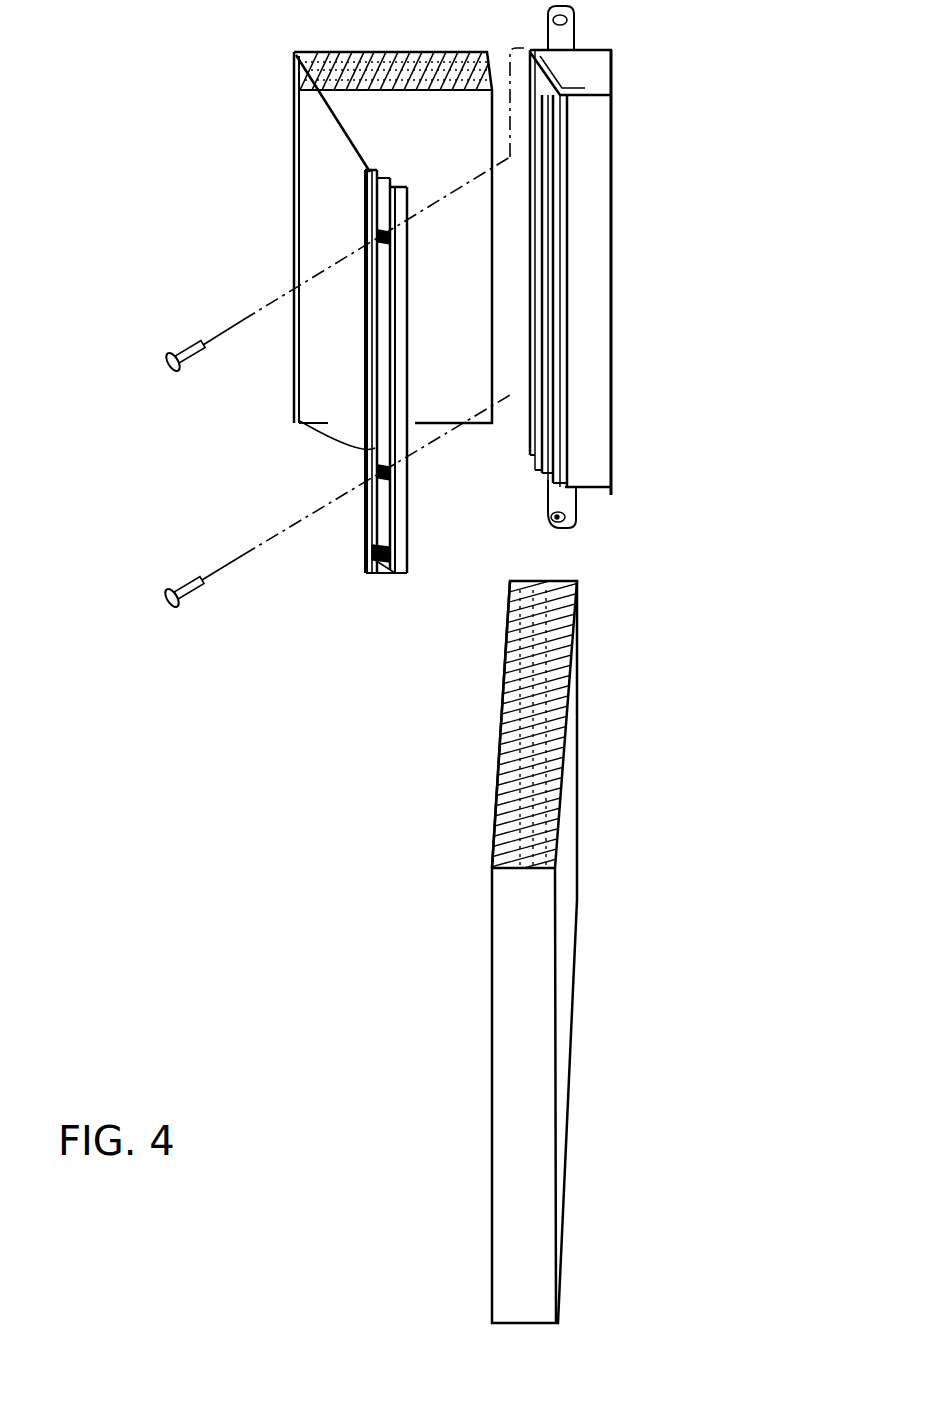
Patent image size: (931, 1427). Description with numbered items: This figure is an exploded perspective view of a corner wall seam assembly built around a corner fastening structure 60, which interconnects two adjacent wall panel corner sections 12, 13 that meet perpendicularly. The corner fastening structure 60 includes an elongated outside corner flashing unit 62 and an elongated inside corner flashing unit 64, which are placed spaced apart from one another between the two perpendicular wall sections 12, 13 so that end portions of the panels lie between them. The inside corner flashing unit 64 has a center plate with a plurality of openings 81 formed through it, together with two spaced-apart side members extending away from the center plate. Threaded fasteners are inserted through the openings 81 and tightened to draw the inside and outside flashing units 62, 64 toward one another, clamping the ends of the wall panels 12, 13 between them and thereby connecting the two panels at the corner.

The wall panel corner section 12 is at (453, 148).
The wall panel corner section 13 is at (566, 895).
The corner fastening structure 60 is at (688, 167).
The outside corner flashing unit 62 is at (618, 292).
The inside corner flashing unit 64 is at (370, 556).
The openings 81 is at (370, 473).